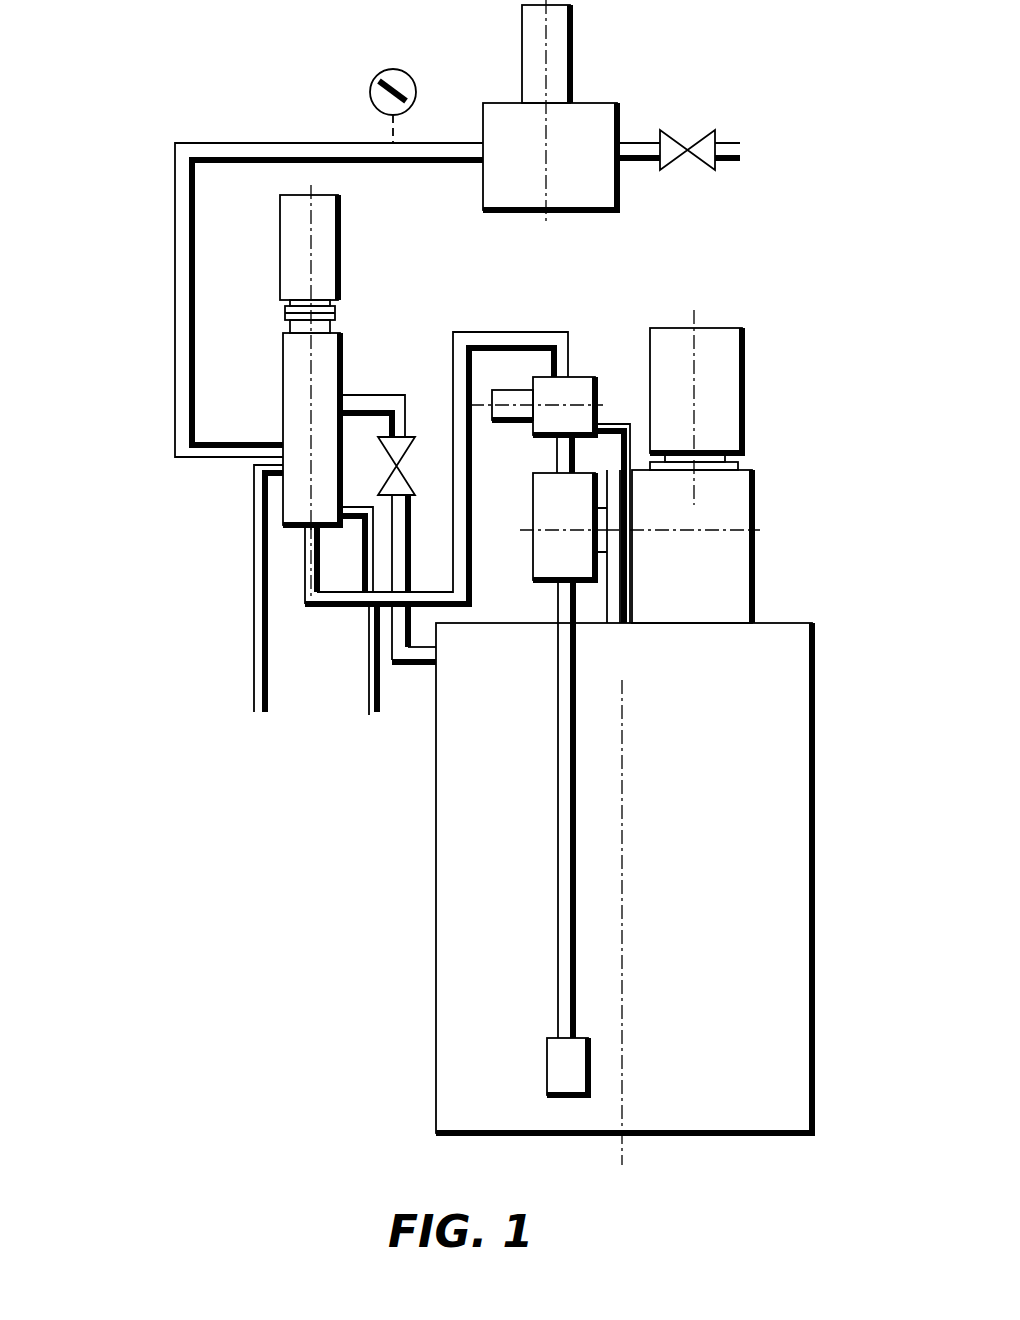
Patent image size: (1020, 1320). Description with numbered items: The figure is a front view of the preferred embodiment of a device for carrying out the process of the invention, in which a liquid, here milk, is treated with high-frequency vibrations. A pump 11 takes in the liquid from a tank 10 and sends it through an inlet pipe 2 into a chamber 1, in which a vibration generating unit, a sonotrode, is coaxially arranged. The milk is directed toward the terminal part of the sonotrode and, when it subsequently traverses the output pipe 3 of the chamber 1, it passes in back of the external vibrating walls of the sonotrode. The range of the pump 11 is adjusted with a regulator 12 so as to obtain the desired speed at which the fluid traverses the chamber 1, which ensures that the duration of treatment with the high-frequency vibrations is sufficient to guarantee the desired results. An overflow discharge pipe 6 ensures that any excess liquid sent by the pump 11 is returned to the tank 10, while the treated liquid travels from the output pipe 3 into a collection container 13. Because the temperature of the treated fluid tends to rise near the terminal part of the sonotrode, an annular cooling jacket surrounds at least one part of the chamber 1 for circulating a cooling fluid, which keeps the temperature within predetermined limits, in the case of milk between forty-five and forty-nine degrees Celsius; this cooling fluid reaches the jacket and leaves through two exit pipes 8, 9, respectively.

The chamber 1 is at (290, 398).
The inlet pipe 2 is at (310, 592).
The output pipe 3 is at (183, 347).
The overflow discharge pipe 6 is at (372, 400).
The exit pipe 8 is at (372, 690).
The exit pipe 9 is at (258, 678).
The tank 10 is at (785, 988).
The pump 11 is at (725, 568).
The regulator 12 is at (575, 385).
The collection container 13 is at (582, 125).